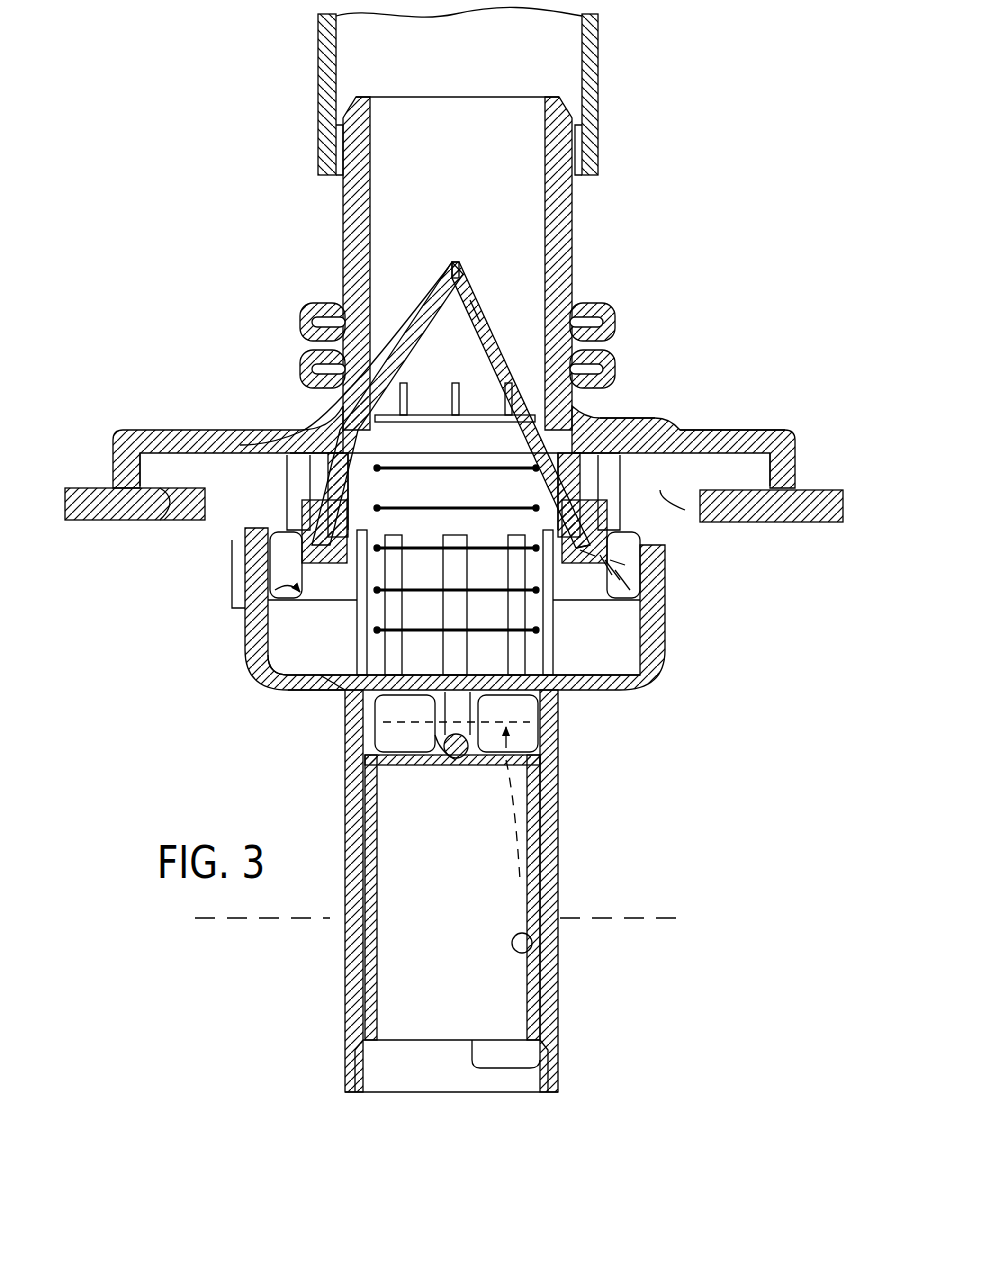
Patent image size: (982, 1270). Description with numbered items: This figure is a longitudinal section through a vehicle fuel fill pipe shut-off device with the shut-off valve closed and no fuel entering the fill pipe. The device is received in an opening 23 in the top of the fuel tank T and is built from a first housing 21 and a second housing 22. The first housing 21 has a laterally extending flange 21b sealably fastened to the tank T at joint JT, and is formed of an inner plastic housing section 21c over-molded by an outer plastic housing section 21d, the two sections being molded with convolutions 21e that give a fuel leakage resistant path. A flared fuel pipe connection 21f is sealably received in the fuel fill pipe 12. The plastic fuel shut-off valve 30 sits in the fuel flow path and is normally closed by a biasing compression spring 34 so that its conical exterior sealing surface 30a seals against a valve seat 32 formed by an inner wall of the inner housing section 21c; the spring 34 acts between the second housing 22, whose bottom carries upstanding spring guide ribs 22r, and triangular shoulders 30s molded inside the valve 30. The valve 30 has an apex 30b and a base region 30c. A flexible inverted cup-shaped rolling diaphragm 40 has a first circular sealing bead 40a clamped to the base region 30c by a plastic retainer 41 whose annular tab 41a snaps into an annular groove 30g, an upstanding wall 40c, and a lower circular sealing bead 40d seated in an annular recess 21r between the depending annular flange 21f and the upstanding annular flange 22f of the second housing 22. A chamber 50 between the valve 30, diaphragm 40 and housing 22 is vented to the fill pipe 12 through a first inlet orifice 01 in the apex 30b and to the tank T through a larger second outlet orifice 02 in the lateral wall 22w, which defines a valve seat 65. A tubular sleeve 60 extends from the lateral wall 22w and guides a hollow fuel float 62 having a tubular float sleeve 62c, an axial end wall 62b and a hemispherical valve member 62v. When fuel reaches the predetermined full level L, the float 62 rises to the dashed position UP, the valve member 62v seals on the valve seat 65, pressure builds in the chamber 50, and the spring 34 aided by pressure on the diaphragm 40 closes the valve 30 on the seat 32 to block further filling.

The fuel fill pipe 12 is at (592, 72).
The first housing 21 is at (290, 248).
The laterally extending flange 21b is at (122, 428).
The inner plastic housing section 21c is at (705, 428).
The outer plastic housing section 21d is at (618, 415).
The convolutions 21e is at (600, 322).
The fuel pipe connection 21f is at (462, 130).
The annular recess 21r is at (625, 566).
The second housing 22 is at (262, 690).
The upstanding annular flange 22f is at (258, 553).
The spring guide ribs 22r is at (415, 612).
The lateral wall 22w is at (305, 690).
The opening 23 is at (690, 510).
The fuel shut-off valve 30 is at (420, 310).
The conical exterior sealing surface 30a is at (530, 300).
The apex 30b is at (456, 262).
The base region 30c is at (592, 553).
The annular groove 30g is at (620, 508).
The triangular shoulders 30s is at (508, 383).
The valve seat 32 is at (356, 432).
The biasing compression spring 34 is at (415, 422).
The flexible rolling diaphragm 40 is at (300, 587).
The first circular sealing bead 40a is at (605, 590).
The upstanding wall 40c is at (615, 580).
The circular sealing bead 40d is at (625, 590).
The plastic retainer 41 is at (578, 610).
The annular tab 41a is at (557, 530).
The chamber 50 is at (275, 650).
The tubular sleeve 60 is at (558, 993).
The fuel float 62 is at (525, 895).
The axial end wall 62b is at (410, 766).
The tubular float sleeve 62c is at (540, 958).
The hemispherical valve member 62v is at (470, 766).
The valve seat 65 is at (325, 692).
The first inlet orifice 01 is at (448, 260).
The second outlet orifice 02 is at (370, 745).
The fuel tank T is at (812, 490).
The joint JT is at (110, 520).
The dashed position UP is at (555, 850).
The fuel full level L is at (642, 918).